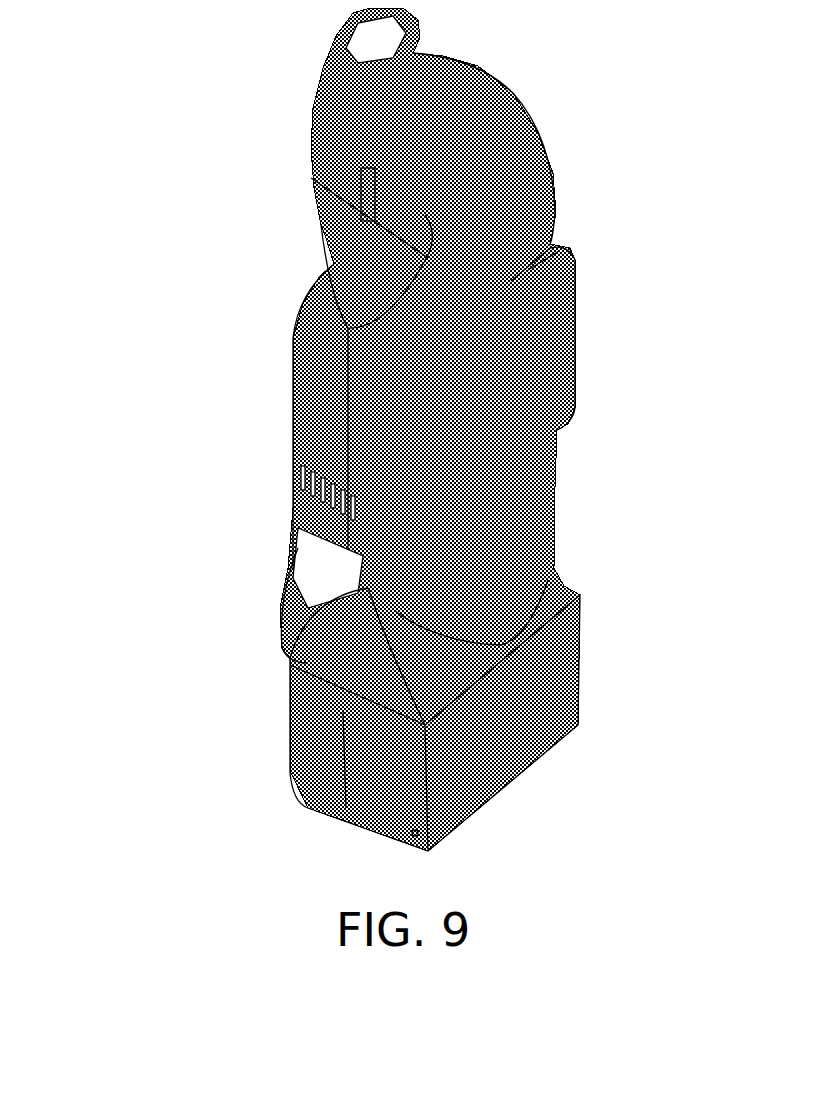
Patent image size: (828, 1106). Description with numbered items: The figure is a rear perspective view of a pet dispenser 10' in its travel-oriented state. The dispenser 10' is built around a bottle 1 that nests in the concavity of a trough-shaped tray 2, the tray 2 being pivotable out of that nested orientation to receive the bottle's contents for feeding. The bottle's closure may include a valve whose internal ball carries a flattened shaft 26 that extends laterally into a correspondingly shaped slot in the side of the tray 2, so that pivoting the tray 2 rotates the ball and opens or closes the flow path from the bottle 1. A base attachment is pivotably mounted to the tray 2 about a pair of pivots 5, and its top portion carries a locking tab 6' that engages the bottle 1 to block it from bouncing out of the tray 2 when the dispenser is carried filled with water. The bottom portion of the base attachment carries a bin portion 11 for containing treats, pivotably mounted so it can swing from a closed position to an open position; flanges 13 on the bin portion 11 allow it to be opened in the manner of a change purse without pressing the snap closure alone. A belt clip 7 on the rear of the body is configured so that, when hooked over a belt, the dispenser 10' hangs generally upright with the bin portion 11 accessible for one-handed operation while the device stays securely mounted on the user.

The dispenser 10' is at (331, 429).
The tray 2 is at (525, 178).
The shaft 26 is at (355, 188).
The bottle 1 is at (305, 362).
The belt clip 7 is at (547, 338).
The pivots 5 is at (292, 470).
The locking tab 6' is at (286, 529).
The flanges 13 is at (268, 620).
The bin portion 11 is at (296, 737).